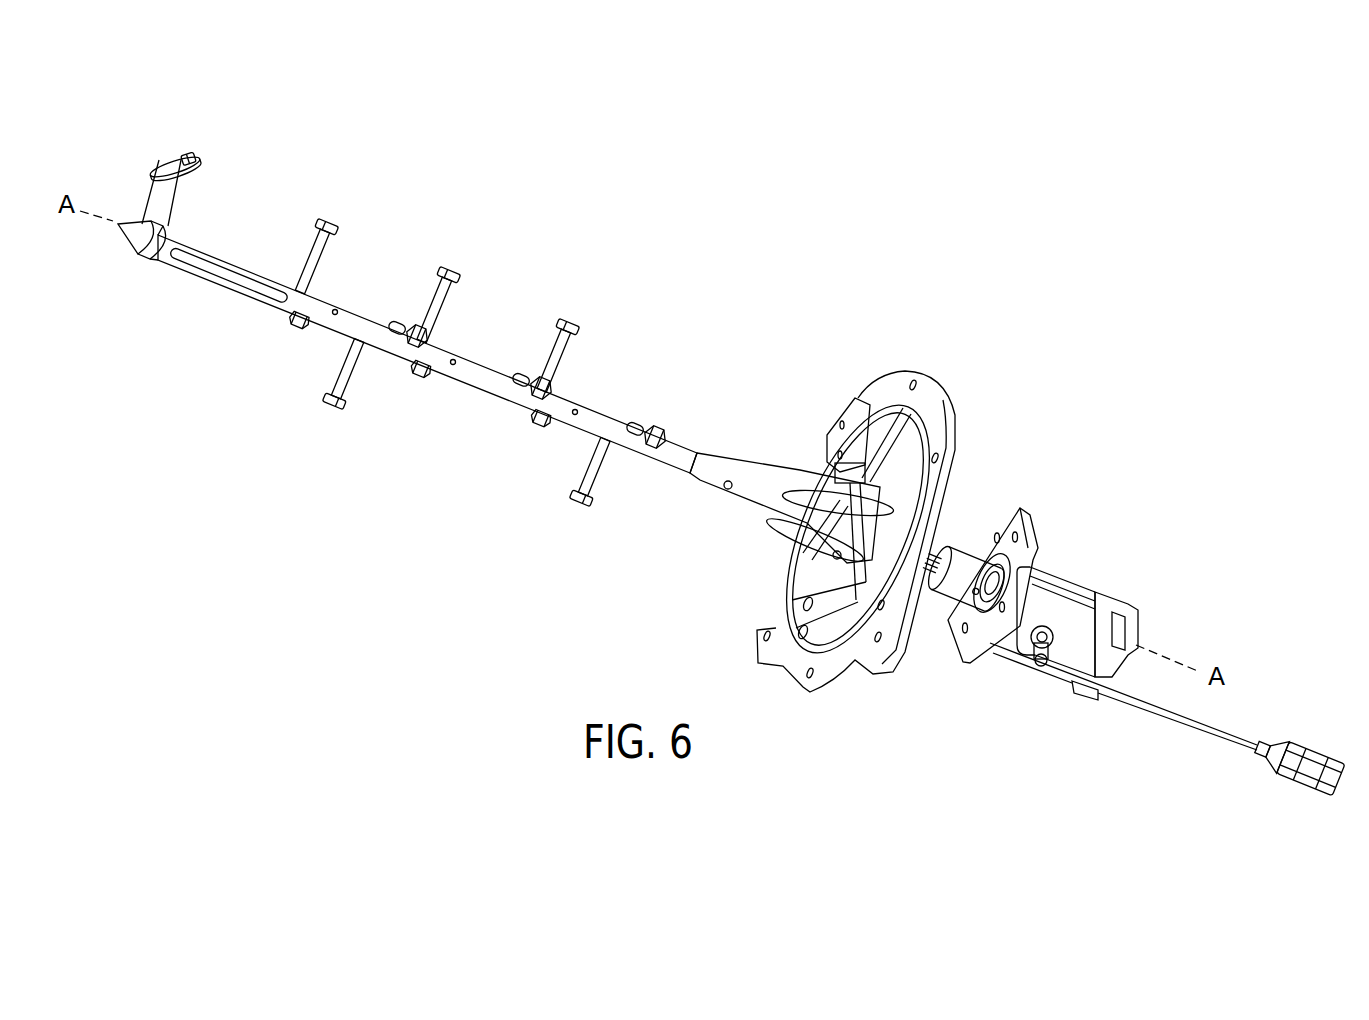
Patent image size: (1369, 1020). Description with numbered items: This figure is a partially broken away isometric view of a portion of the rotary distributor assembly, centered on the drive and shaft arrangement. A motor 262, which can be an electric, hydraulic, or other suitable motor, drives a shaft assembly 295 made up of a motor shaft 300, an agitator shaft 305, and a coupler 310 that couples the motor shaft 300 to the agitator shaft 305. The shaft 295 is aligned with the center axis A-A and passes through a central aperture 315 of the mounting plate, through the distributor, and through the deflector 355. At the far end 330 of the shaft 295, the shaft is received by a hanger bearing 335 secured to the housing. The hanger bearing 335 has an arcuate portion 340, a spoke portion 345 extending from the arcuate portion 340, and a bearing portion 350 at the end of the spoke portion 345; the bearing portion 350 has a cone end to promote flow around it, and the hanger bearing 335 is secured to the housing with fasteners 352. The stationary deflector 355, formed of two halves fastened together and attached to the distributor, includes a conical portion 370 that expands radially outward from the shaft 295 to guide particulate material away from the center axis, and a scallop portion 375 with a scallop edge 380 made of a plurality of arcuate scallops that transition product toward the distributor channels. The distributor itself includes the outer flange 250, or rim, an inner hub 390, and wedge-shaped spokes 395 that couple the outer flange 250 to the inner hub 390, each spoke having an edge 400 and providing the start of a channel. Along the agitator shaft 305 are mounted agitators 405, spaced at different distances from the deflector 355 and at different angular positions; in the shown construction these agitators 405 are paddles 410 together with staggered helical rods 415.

The outer flange 250 is at (932, 392).
The motor 262 is at (1122, 597).
The shaft assembly 295 is at (207, 242).
The motor shaft 300 is at (1008, 582).
The agitator shaft 305 is at (612, 427).
The coupler 310 is at (965, 562).
The central aperture 315 is at (960, 607).
The end of the shaft 330 is at (168, 230).
The hanger bearing 335 is at (128, 235).
The arcuate portion 340 is at (163, 168).
The spoke portion 345 is at (155, 193).
The bearing portion 350 is at (158, 253).
The fasteners 352 is at (191, 154).
The deflector 355 is at (735, 503).
The conical portion 370 is at (722, 453).
The scallop portion 375 is at (812, 477).
The scallop edge 380 is at (792, 487).
The inner hub 390 is at (862, 582).
The spokes 395 is at (891, 440).
The edge 400 is at (807, 630).
The agitators 405 is at (285, 402).
The paddles 410 is at (237, 272).
The helical rods 415 is at (433, 307).